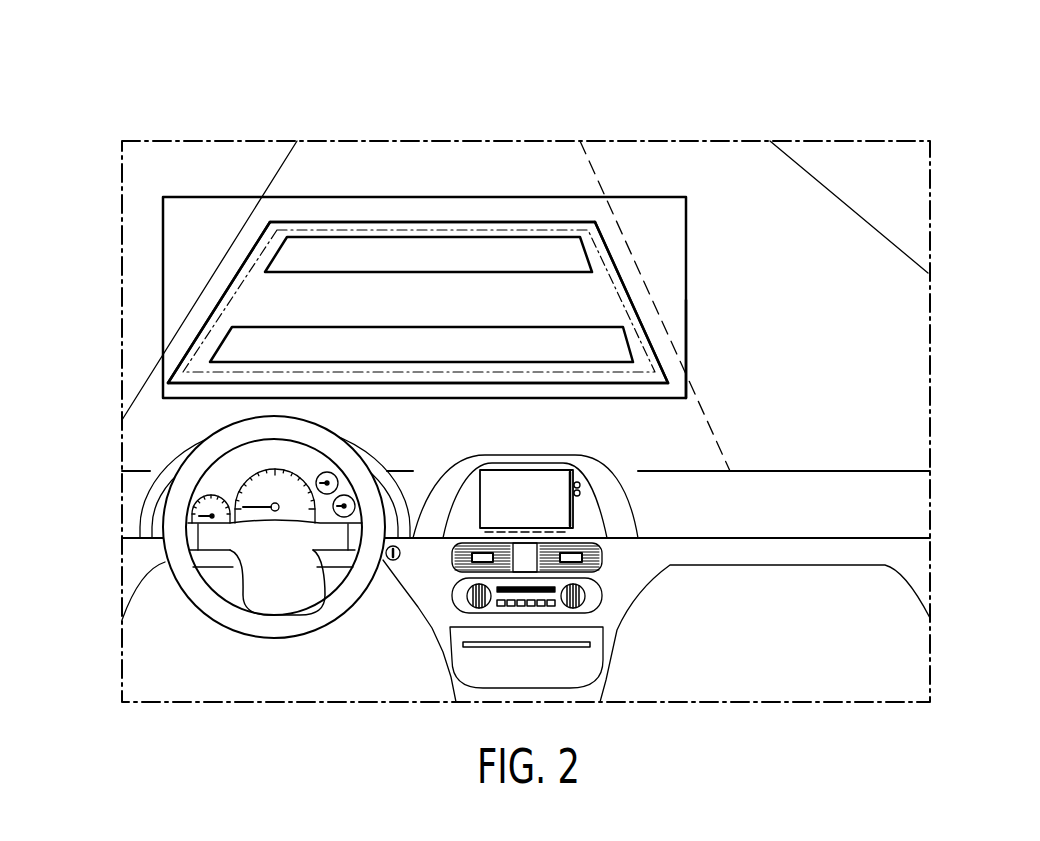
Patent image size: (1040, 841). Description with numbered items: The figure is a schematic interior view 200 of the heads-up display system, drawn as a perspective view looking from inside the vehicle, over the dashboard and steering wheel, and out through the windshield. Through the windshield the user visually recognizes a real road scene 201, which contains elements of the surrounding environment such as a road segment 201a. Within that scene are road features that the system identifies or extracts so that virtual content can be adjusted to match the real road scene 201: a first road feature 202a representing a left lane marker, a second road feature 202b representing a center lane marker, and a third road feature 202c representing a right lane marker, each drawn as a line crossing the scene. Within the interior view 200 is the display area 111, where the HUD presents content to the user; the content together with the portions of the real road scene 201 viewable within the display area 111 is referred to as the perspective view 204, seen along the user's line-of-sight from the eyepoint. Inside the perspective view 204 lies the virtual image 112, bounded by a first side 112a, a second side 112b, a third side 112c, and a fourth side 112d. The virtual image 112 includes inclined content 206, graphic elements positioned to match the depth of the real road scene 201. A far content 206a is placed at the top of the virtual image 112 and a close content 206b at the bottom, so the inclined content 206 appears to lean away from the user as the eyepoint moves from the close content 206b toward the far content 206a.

The interior view 200 is at (913, 100).
The real road scene 201 is at (895, 212).
The road segment 201a is at (495, 172).
The first road feature 202a is at (275, 170).
The second road feature 202b is at (595, 173).
The third road feature 202c is at (810, 175).
The display area 111 is at (686, 222).
The virtual image 112 is at (617, 252).
The first side 112a is at (434, 222).
The second side 112b is at (418, 384).
The third side 112c is at (220, 303).
The fourth side 112d is at (632, 302).
The perspective view 204 is at (692, 364).
The inclined content 206 is at (638, 341).
The far content 206a is at (453, 267).
The close content 206b is at (446, 357).